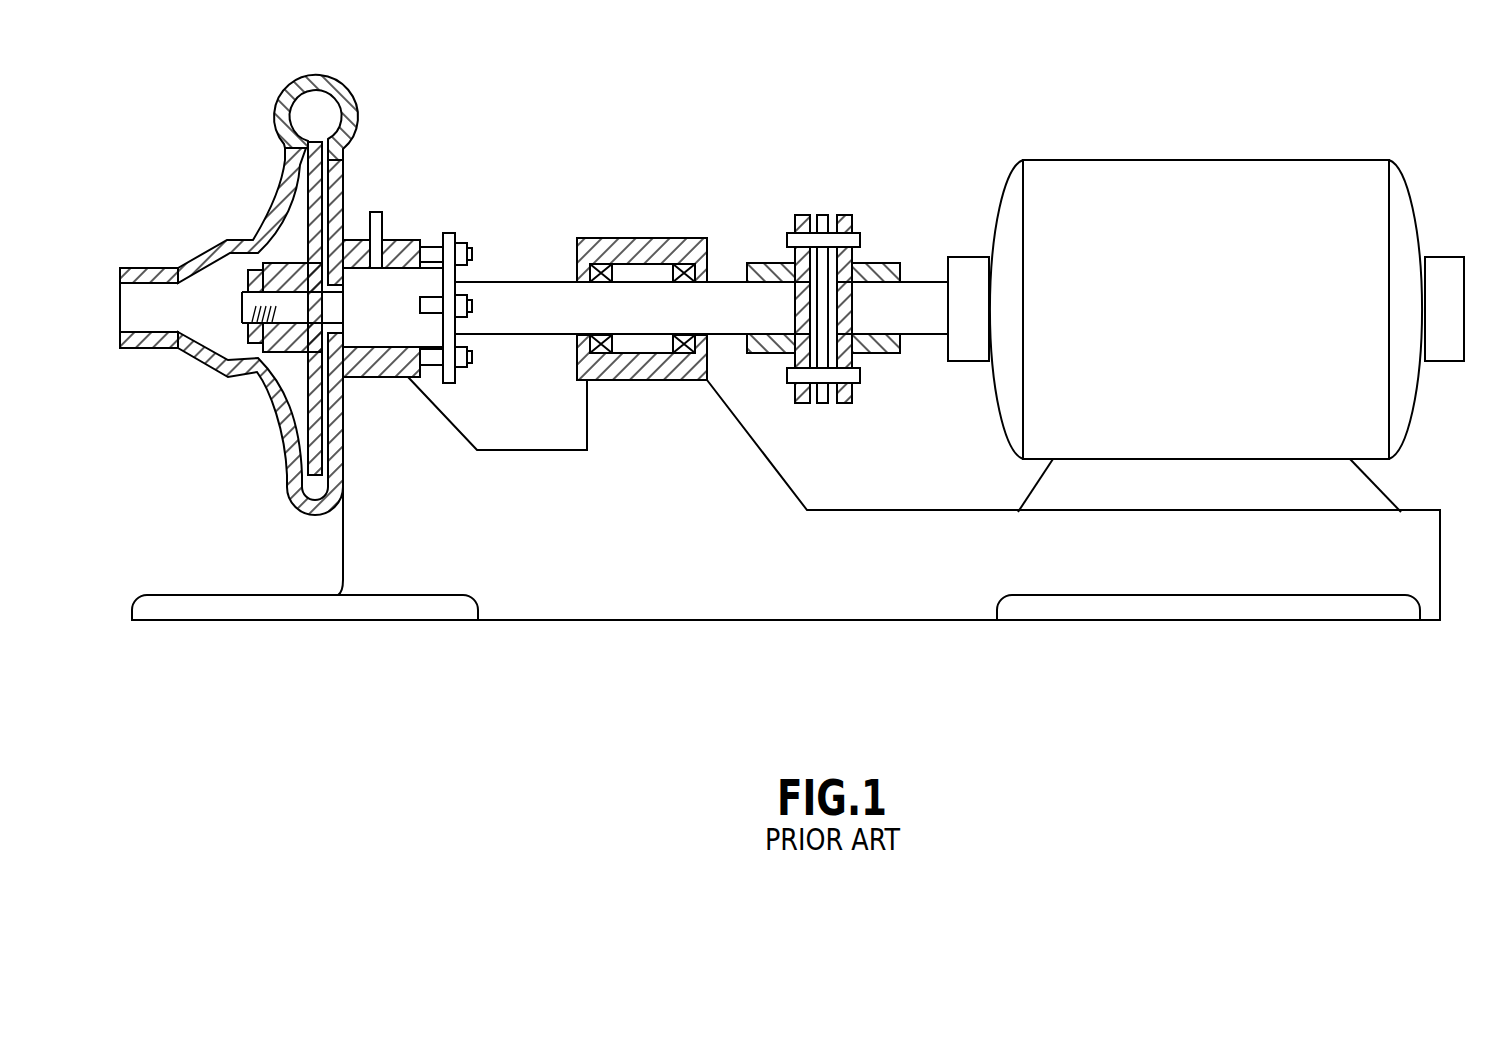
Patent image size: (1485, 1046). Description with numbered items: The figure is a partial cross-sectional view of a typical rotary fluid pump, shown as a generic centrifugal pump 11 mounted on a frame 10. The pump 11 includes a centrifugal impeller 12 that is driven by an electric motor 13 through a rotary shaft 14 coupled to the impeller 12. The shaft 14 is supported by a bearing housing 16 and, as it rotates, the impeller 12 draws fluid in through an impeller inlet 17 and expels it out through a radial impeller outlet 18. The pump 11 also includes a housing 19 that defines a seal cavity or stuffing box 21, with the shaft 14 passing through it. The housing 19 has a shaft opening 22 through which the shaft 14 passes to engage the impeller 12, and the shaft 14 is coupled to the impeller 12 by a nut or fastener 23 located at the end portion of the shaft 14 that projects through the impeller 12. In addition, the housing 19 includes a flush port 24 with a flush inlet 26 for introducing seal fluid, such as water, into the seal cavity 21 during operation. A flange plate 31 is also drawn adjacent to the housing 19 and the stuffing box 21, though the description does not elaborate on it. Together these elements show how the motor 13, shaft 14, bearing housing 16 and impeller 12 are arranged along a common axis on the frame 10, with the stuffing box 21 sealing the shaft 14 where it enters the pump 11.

The frame 10 is at (865, 580).
The centrifugal pump 11 is at (423, 267).
The centrifugal impeller 12 is at (300, 382).
The electric motor 13 is at (1177, 172).
The rotary shaft 14 is at (537, 307).
The bearing housing 16 is at (653, 372).
The impeller inlet 17 is at (130, 317).
The radial impeller outlet 18 is at (307, 107).
The housing 19 is at (378, 372).
The seal cavity or stuffing box 21 is at (458, 302).
The shaft opening 22 is at (417, 300).
The nut or fastener 23 is at (252, 270).
The flush port 24 is at (374, 276).
The flush inlet 26 is at (385, 268).
The flange plate 31 is at (448, 233).